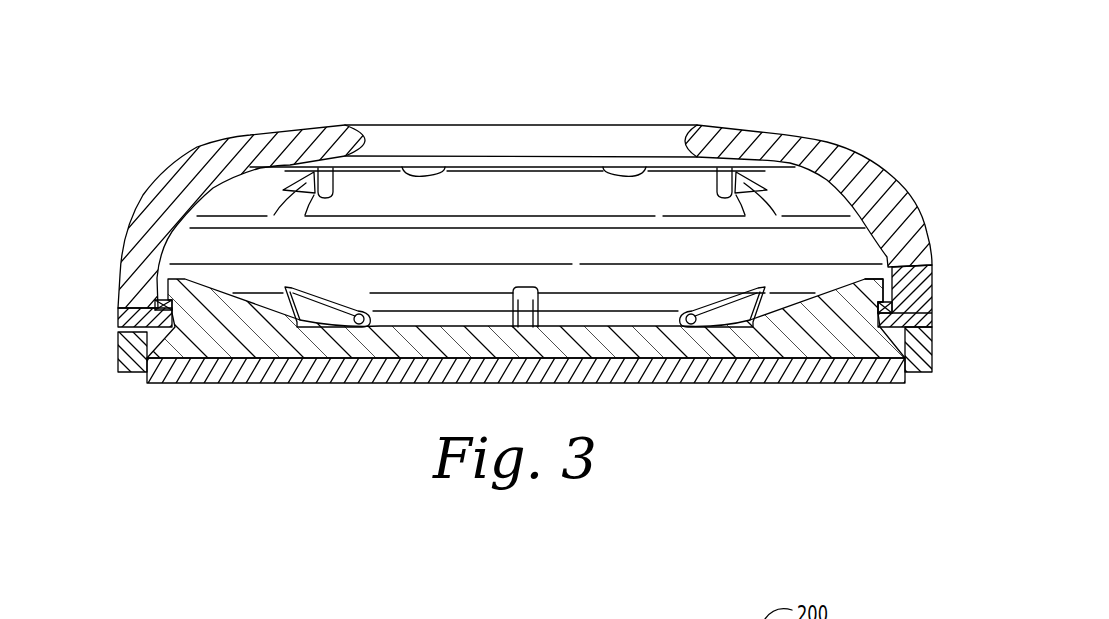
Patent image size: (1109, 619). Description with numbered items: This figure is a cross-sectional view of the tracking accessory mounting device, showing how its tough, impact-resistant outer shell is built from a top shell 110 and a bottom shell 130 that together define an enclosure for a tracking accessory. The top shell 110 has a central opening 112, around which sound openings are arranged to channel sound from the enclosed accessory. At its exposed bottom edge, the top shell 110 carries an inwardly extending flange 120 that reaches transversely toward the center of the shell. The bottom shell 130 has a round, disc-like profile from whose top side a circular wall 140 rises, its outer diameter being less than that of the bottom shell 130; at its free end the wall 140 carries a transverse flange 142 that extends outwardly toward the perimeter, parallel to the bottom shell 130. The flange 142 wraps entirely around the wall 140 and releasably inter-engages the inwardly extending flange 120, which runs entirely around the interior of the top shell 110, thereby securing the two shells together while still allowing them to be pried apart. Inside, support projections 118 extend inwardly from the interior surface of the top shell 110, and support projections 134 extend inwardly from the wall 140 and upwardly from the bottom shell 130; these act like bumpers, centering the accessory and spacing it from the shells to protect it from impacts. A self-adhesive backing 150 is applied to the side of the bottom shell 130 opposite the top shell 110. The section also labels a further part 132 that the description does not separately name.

The top shell 110 is at (883, 168).
The central opening 112 is at (668, 118).
The support projection 118 is at (287, 182).
The inwardly extending flange 120 is at (930, 316).
The bottom shell 130 is at (106, 375).
The side support block 132 is at (899, 343).
The support projection 134 is at (525, 275).
The wall 140 is at (180, 317).
The transverse flange 142 is at (890, 280).
The self-adhesive backing 150 is at (860, 386).